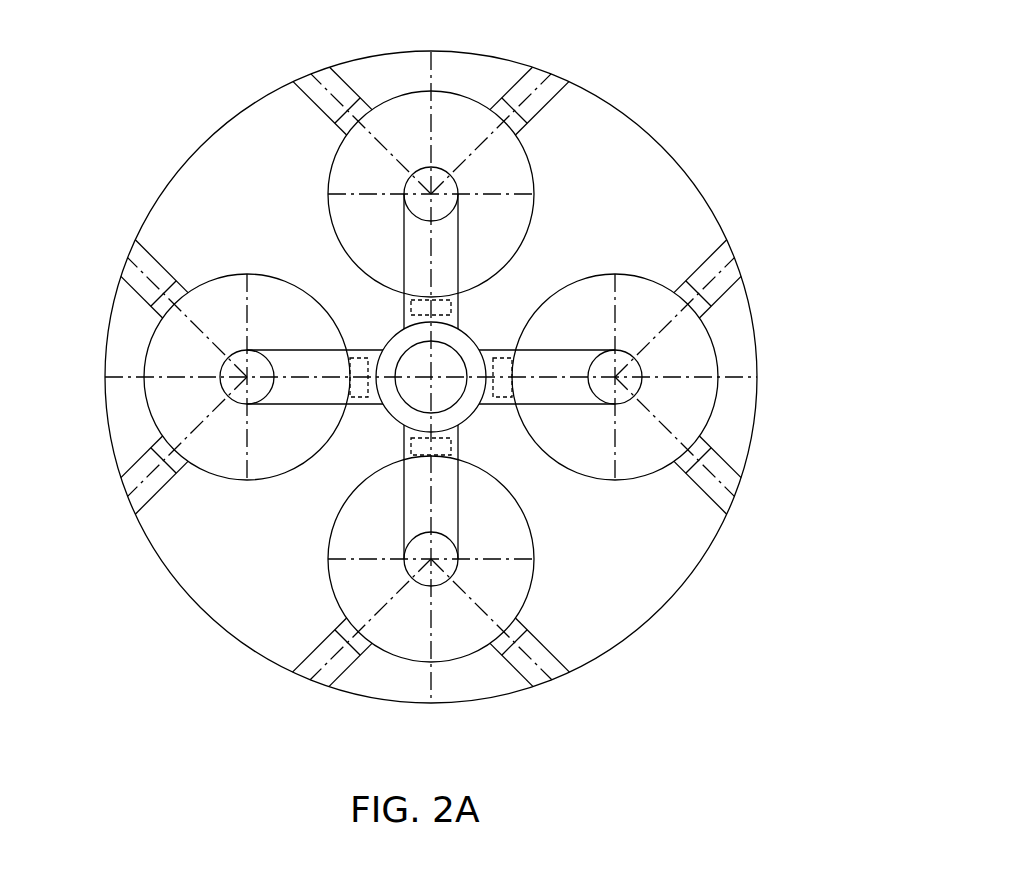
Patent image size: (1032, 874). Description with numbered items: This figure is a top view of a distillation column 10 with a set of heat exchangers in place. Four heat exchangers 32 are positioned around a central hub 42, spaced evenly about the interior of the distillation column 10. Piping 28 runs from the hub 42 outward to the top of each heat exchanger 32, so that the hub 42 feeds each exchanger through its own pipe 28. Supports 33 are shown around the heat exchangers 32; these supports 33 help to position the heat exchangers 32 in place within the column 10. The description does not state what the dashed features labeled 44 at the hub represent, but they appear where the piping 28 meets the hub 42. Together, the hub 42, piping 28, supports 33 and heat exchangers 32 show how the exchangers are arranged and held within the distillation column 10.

The distillation column 10 is at (655, 140).
The heat exchanger 32 is at (147, 352).
The support 33 is at (155, 247).
The piping 28 is at (497, 406).
The central hub 42 is at (448, 367).
The hidden passage 44 is at (363, 348).